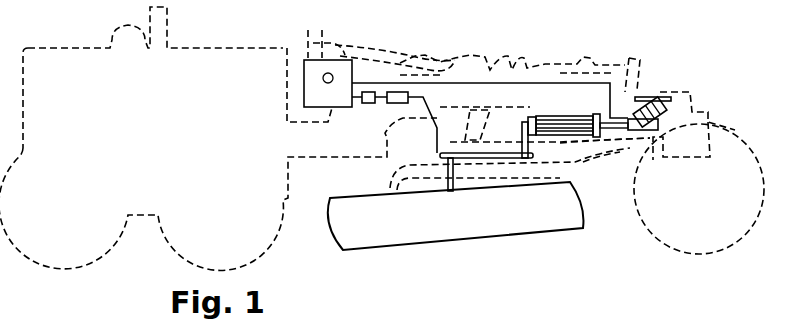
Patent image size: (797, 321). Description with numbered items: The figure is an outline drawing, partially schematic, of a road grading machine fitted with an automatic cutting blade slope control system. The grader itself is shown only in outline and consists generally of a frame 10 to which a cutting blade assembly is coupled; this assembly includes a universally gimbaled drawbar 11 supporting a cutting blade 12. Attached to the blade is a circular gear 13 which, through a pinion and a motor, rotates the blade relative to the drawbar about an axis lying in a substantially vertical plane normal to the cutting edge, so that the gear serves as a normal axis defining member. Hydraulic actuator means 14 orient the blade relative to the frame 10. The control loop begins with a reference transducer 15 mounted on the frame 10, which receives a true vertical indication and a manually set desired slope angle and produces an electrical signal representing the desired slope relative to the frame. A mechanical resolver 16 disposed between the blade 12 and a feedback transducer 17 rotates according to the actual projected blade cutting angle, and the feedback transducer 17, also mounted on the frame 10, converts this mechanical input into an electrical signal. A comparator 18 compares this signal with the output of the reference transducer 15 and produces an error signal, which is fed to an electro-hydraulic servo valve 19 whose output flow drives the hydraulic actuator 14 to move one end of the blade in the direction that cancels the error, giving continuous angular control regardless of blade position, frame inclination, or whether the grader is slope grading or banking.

The frame 10 is at (73, 245).
The drawbar 11 is at (603, 147).
The cutting blade 12 is at (350, 235).
The circular gear 13 is at (555, 170).
The hydraulic actuator means 14 is at (483, 117).
The reference transducer 15 is at (336, 63).
The mechanical resolver 16 is at (527, 120).
The feedback transducer 17 is at (656, 117).
The comparator 18 is at (366, 98).
The electro-hydraulic servo valve 19 is at (398, 95).